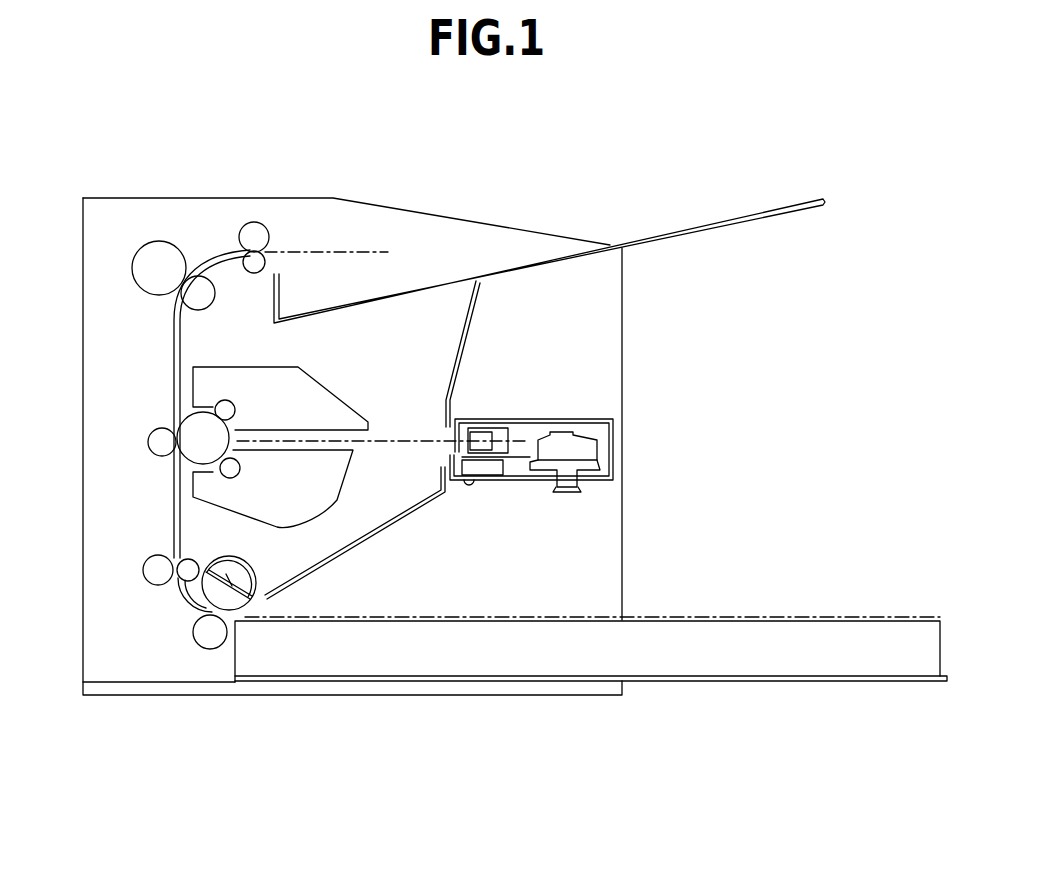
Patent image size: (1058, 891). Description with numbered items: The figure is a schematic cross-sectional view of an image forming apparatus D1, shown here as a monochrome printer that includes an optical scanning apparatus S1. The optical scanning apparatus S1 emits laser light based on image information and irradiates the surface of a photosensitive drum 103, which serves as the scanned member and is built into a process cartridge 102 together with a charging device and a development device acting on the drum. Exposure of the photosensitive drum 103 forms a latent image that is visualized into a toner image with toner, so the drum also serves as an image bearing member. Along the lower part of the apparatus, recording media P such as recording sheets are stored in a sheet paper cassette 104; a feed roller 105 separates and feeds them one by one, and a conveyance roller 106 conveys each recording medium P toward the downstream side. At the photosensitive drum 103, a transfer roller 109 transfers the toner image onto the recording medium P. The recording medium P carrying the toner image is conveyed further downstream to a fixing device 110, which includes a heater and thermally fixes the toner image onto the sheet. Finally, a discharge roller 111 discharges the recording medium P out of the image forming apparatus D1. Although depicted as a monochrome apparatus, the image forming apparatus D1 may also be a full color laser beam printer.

The image forming apparatus D1 is at (108, 215).
The fixing device 110 is at (160, 250).
The discharge roller 111 is at (252, 230).
The photosensitive drum 103 is at (203, 425).
The process cartridge 102 is at (333, 385).
The transfer roller 109 is at (162, 437).
The optical scanning apparatus S1 is at (557, 430).
The conveyance roller 106 is at (152, 568).
The feed roller 105 is at (250, 570).
The recording medium P is at (770, 617).
The sheet paper cassette 104 is at (672, 682).